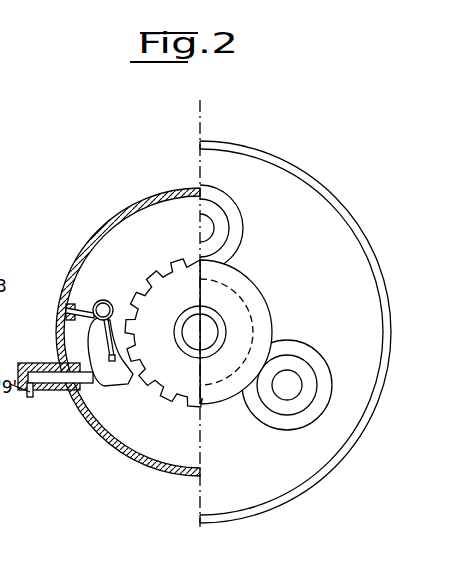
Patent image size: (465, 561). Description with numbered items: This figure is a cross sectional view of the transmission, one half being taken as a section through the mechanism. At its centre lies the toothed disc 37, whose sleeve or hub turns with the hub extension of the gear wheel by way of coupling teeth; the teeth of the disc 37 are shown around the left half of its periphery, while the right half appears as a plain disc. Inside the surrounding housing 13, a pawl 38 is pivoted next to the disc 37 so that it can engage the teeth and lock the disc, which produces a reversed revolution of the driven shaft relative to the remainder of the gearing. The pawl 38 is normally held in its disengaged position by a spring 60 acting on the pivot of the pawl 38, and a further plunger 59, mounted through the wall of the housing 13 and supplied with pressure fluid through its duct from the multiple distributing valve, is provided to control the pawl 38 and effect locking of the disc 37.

The housing casing 13 is at (106, 224).
The toothed disc 37 is at (184, 264).
The pawl 38 is at (110, 384).
The plunger 59 is at (42, 364).
The spring 60 is at (104, 300).